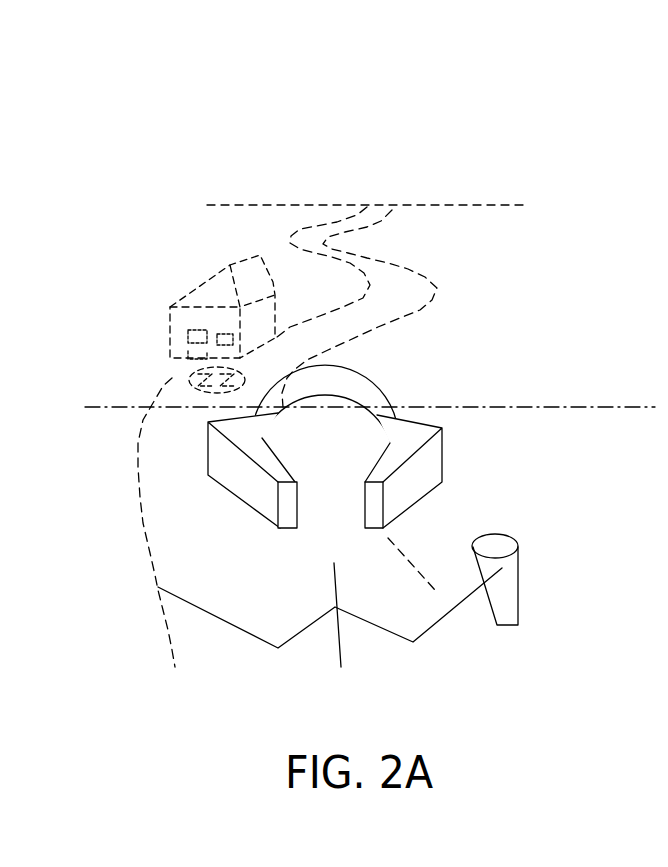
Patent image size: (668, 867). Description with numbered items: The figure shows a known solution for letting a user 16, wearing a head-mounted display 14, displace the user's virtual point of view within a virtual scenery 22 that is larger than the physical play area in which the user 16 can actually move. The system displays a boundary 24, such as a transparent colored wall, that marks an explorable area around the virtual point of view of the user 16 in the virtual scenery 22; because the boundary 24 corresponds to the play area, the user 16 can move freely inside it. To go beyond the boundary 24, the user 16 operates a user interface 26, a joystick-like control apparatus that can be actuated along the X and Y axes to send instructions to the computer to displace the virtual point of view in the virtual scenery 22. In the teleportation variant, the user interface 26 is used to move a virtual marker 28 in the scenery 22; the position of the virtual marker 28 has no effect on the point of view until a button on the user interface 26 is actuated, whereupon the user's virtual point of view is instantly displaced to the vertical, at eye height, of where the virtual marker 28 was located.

The head mounted display 14 is at (443, 468).
The user 16 is at (342, 659).
The virtual scenery 22 is at (442, 205).
The boundary 24 is at (552, 407).
The user interface 26 is at (518, 600).
The virtual marker 28 is at (187, 380).